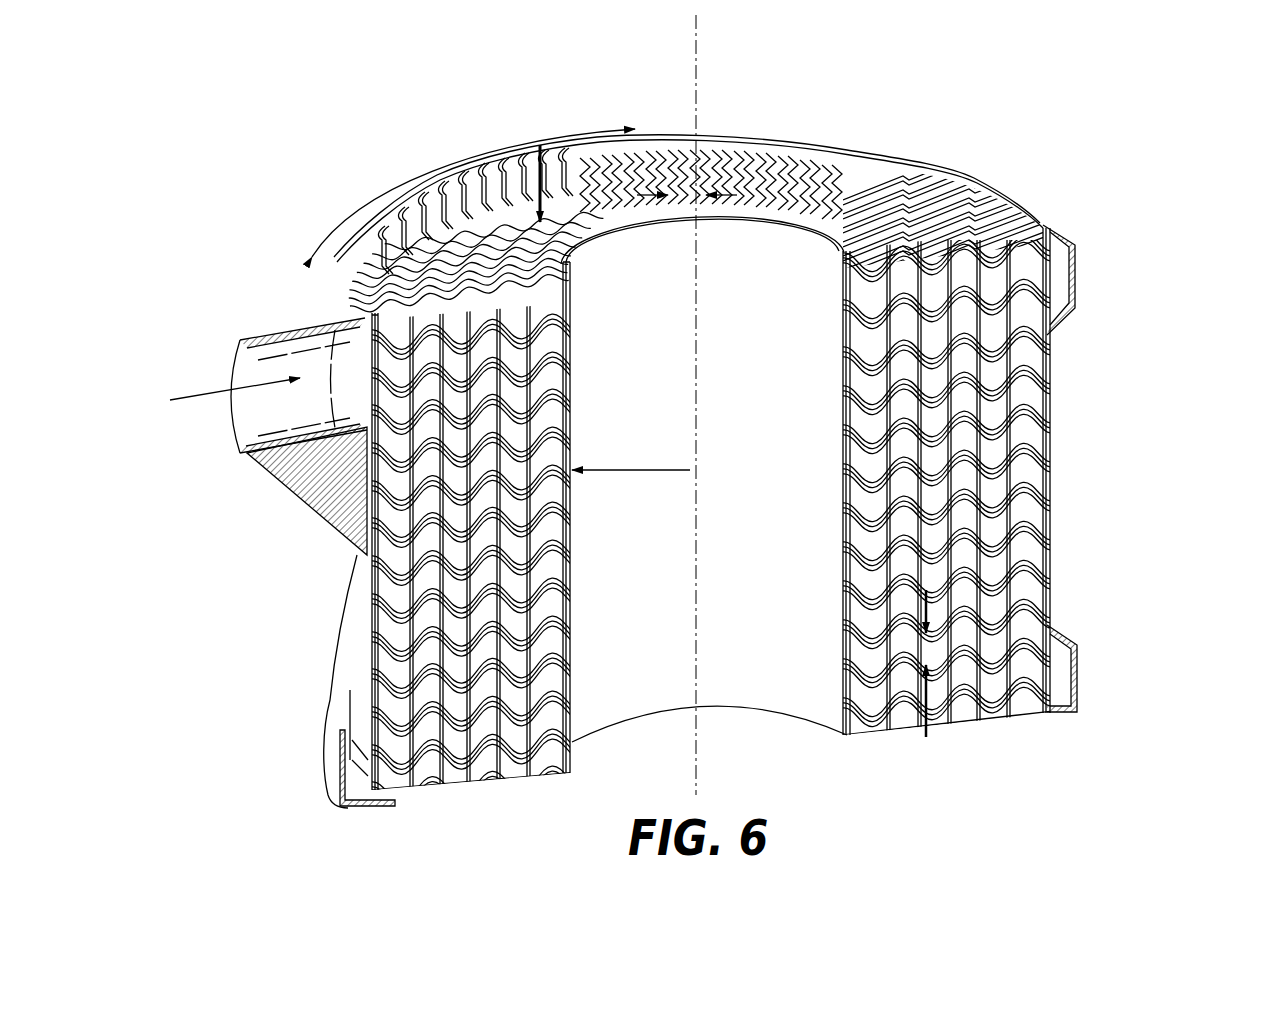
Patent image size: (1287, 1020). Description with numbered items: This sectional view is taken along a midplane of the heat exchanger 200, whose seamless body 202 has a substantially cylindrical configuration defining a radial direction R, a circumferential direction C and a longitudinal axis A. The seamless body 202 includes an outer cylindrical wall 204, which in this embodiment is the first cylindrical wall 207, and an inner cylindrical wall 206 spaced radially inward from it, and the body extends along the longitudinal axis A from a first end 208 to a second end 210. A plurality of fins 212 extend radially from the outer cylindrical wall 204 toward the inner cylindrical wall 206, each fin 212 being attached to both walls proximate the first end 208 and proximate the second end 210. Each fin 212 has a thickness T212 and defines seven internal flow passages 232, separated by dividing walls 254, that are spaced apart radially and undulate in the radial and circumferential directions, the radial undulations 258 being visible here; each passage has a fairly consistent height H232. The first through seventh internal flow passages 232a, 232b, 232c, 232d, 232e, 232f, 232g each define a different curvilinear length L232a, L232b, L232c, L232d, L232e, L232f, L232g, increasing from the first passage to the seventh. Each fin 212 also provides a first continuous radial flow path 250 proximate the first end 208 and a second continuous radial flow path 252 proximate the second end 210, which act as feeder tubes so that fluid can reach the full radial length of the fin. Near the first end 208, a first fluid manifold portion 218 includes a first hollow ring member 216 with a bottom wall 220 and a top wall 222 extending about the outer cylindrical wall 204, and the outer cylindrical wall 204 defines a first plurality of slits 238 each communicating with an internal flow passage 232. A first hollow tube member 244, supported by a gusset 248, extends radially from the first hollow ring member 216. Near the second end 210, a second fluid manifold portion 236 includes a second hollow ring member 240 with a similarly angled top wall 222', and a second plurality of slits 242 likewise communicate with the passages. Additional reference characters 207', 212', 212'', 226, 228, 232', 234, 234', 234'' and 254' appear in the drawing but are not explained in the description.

The heat exchanger 200 is at (632, 170).
The seamless body 202 is at (297, 252).
The outer cylindrical wall 204 is at (291, 681).
The inner cylindrical wall 206 is at (704, 479).
The first cylindrical wall 207 is at (704, 479).
The outer wall 207' is at (291, 681).
The first end 208 is at (632, 170).
The second end 210 is at (1050, 712).
The fins 212 is at (1091, 307).
The outer fluid passage 212' is at (1091, 307).
The header fluid passage 212'' is at (557, 193).
The first hollow ring member 216 is at (632, 170).
The first fluid manifold portion 218 is at (632, 170).
The bottom wall 220 is at (1091, 307).
The top wall 222 is at (632, 170).
The top wall of second fluid manifold portion 222' is at (1148, 686).
The axial flow direction 226 is at (548, 140).
The inlet flow 228 is at (266, 401).
The internal flow passage 232 is at (787, 518).
The corrugated fin layer 232' is at (787, 518).
The first internal flow passage 232a is at (787, 518).
The second internal flow passage 232b is at (787, 518).
The third internal flow passage 232c is at (787, 518).
The fourth internal flow passage 232d is at (787, 518).
The fifth internal flow passage 232e is at (787, 518).
The sixth internal flow passage 232f is at (787, 518).
The seventh internal flow passage 232g is at (1050, 640).
The fin sheet 234 is at (962, 217).
The fin sheet 234' is at (1041, 536).
The header fin 234'' is at (557, 193).
The second fluid manifold portion 236 is at (1148, 686).
The first plurality of slits 238 is at (557, 193).
The second hollow ring member 240 is at (1065, 632).
The second plurality of slits 242 is at (348, 775).
The first hollow tube member 244 is at (266, 401).
The gusset 248 is at (262, 322).
The first continuous radial flow path 250 is at (985, 268).
The second continuous radial flow path 252 is at (875, 712).
The dividing walls 254 is at (870, 426).
The fin wall 254' is at (836, 344).
The radial undulations 258 is at (968, 415).
The longitudinal axis A is at (696, 718).
The circumferential direction C is at (438, 165).
The radial direction R is at (615, 475).
The thickness of fin T212 is at (333, 330).
The height of internal flow passage H232 is at (930, 738).
The first curvilinear length L232a is at (1010, 440).
The second curvilinear length L232b is at (1005, 455).
The third curvilinear length L232c is at (940, 500).
The fourth curvilinear length L232d is at (955, 480).
The fifth curvilinear length L232e is at (960, 470).
The sixth curvilinear length L232f is at (945, 470).
The seventh curvilinear length L232g is at (845, 437).